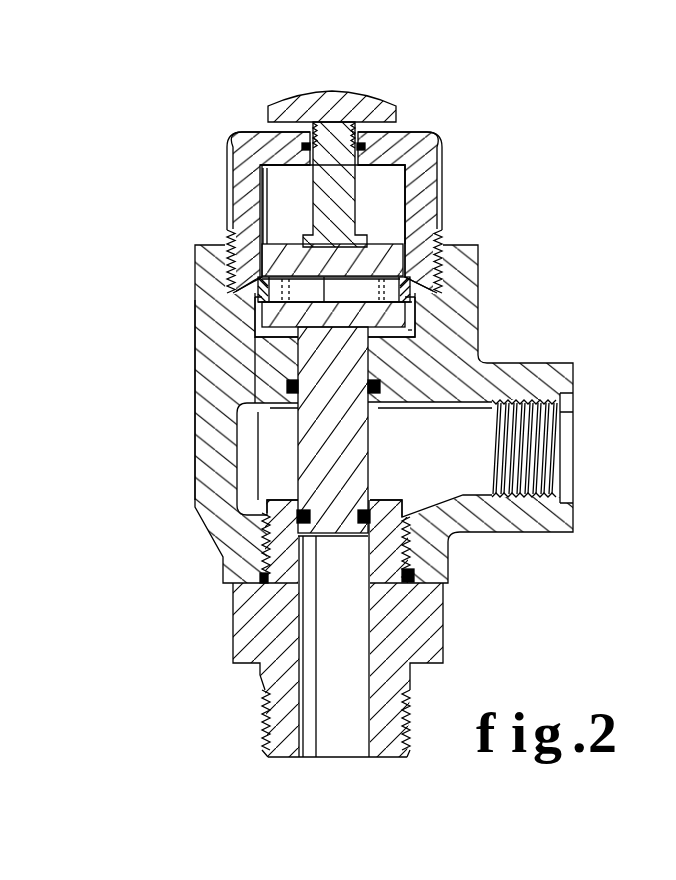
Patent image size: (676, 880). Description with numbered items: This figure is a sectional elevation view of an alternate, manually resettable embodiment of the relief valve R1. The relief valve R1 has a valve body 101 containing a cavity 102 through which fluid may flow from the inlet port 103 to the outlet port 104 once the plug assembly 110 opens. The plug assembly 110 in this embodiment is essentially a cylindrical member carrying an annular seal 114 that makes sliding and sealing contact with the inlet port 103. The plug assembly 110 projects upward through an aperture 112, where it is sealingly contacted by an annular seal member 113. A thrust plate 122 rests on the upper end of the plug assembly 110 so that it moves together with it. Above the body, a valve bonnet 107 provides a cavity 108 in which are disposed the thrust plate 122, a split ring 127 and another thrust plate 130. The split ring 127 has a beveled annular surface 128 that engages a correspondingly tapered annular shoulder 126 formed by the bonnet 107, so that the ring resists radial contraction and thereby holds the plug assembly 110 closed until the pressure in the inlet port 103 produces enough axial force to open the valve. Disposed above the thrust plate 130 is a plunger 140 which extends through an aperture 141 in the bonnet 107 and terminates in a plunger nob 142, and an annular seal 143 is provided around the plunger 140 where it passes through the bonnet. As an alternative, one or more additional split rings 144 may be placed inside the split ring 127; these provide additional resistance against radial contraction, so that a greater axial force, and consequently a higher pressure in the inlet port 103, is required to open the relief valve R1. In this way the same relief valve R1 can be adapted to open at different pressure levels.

The valve body 101 is at (232, 540).
The cavity 102 is at (253, 475).
The inlet port 103 is at (360, 737).
The outlet port 104 is at (533, 463).
The valve bonnet 107 is at (430, 160).
The cavity 108 is at (388, 220).
The plug assembly 110 is at (370, 476).
The aperture 112 is at (296, 348).
The annular seal member 113 is at (378, 395).
The annular seal 114 is at (358, 535).
The thrust plate 122 is at (258, 357).
The tapered annular shoulder 126 is at (418, 292).
The split ring 127 is at (255, 297).
The beveled annular surface 128 is at (412, 276).
The thrust plate 130 is at (410, 248).
The plunger 140 is at (322, 194).
The aperture 141 is at (328, 126).
The plunger nob 142 is at (364, 92).
The annular seal 143 is at (366, 146).
The additional split ring 144 is at (408, 327).
The relief valve R1 is at (195, 455).